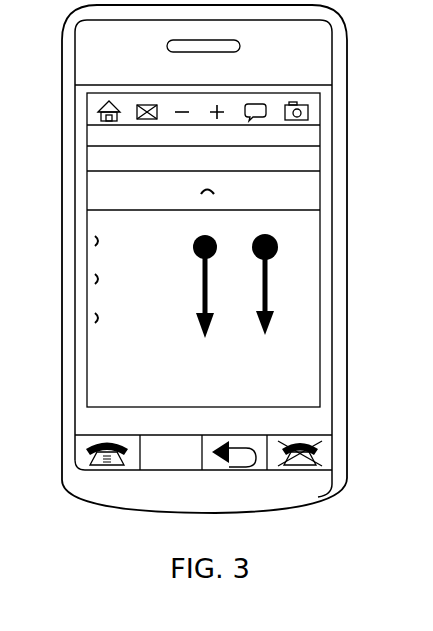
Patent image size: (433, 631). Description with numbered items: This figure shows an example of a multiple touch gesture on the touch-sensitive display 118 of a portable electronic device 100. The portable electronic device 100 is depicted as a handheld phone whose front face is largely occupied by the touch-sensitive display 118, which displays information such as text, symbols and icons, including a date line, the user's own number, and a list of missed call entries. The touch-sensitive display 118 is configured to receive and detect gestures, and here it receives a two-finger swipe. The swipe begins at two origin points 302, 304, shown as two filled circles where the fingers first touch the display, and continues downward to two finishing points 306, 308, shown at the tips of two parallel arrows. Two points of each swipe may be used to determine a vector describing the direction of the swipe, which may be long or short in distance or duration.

The portable electronic device 100 is at (346, 52).
The touch-sensitive display 118 is at (320, 160).
The origin point 302 is at (147, 265).
The origin point 304 is at (278, 242).
The finishing point 306 is at (200, 340).
The finishing point 308 is at (265, 335).